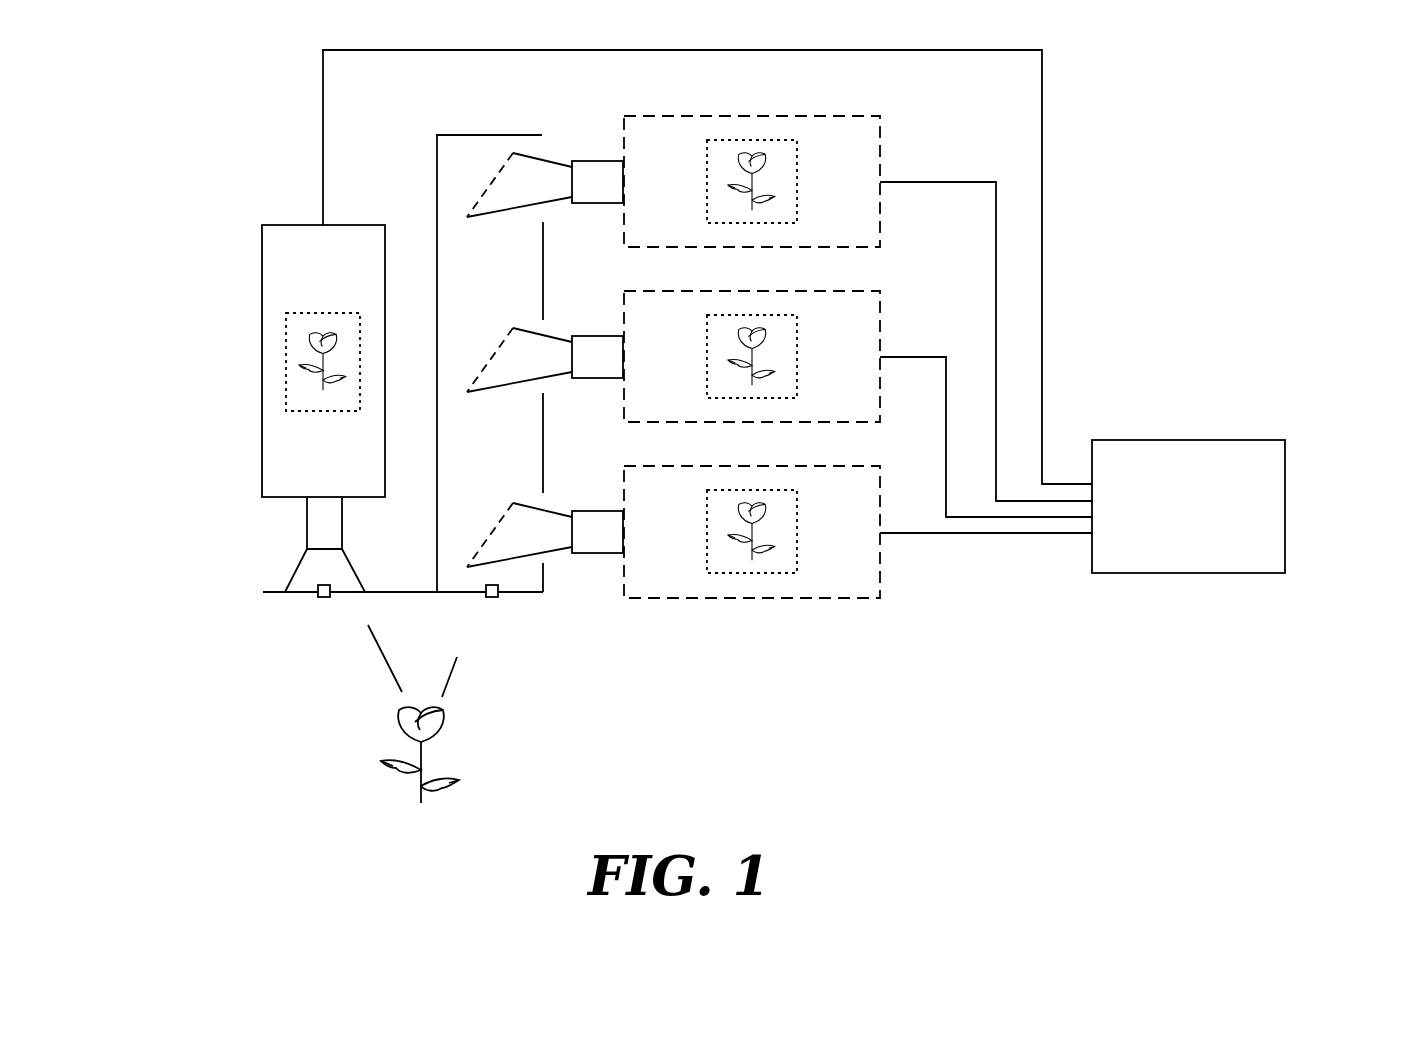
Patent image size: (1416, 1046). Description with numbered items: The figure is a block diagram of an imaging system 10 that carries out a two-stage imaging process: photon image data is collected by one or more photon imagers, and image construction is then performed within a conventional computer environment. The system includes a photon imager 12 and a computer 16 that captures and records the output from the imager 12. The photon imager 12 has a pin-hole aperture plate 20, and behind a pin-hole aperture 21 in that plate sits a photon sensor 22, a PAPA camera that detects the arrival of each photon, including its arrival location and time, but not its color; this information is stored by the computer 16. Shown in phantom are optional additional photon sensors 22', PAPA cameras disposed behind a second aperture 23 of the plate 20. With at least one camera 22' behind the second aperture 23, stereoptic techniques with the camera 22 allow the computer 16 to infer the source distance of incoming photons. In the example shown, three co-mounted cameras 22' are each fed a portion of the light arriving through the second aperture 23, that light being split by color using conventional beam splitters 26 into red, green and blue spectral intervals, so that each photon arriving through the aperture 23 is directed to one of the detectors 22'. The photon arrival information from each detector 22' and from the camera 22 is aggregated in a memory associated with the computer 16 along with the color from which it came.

The imaging system 10 is at (1333, 125).
The photon imager 12 is at (165, 390).
The computer 16 is at (1270, 503).
The pin-hole aperture plate 20 is at (276, 597).
The pin-hole aperture 21 is at (324, 597).
The photon sensor (PAPA camera) 22 is at (281, 336).
The additional photon sensor (PAPA camera) 22' is at (797, 384).
The second aperture 23 is at (492, 597).
The beam splitter 26 is at (297, 351).